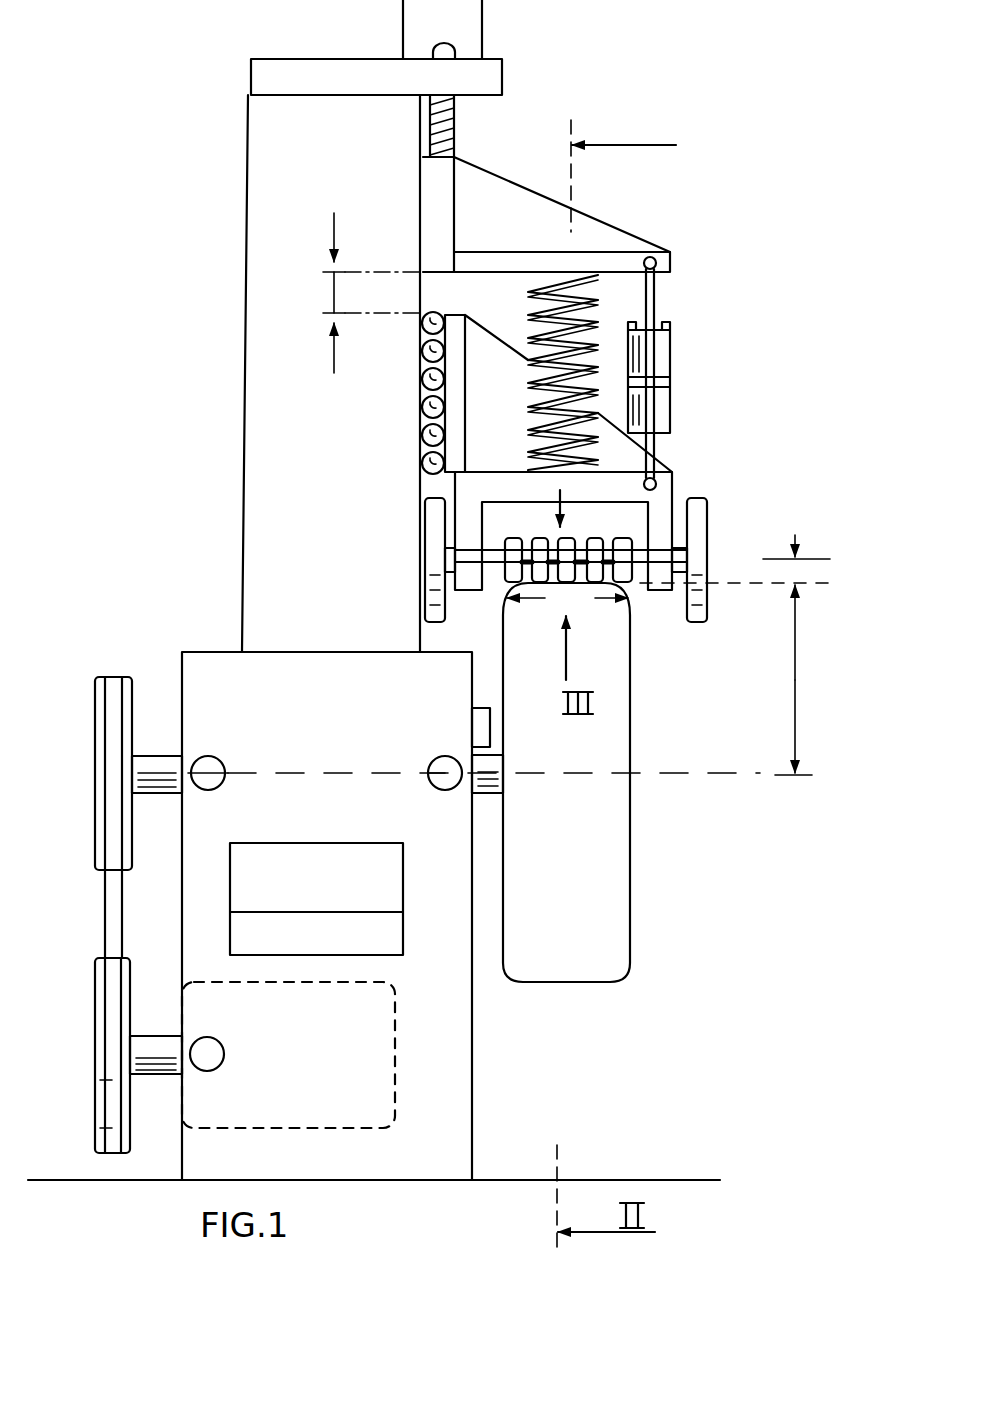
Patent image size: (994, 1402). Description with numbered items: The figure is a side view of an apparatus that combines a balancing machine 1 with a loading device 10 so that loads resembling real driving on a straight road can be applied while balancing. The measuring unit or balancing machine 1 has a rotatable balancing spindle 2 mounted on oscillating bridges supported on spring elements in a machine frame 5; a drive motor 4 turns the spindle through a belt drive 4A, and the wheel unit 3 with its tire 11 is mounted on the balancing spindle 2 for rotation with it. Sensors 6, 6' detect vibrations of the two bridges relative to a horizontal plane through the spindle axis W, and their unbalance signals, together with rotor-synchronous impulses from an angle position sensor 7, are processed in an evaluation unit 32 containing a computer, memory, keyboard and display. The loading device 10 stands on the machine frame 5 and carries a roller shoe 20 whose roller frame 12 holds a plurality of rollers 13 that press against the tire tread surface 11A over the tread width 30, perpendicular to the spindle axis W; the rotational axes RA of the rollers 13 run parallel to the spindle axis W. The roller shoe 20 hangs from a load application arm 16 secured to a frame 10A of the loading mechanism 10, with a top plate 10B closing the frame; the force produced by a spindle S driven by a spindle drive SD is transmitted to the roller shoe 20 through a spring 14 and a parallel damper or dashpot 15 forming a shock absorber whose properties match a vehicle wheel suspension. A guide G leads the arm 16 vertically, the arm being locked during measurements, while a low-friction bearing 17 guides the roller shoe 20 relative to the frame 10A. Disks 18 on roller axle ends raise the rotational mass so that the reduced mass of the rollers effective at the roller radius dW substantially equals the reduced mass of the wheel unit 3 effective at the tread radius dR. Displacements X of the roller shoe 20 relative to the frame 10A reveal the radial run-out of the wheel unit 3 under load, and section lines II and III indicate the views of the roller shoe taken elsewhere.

The balancing machine 1 is at (218, 678).
The balancing spindle 2 is at (497, 767).
The wheel unit 3 is at (644, 955).
The drive motor 4 is at (297, 1112).
The belt drive 4A is at (102, 918).
The machine frame 5 is at (404, 1170).
The sensor 6 is at (194, 766).
The sensor 6' is at (426, 764).
The angle position sensor 7 is at (489, 732).
The loading device 10 is at (286, 373).
The frame of the loading mechanism 10A is at (265, 488).
The top plate 10B is at (484, 79).
The tire 11 is at (588, 782).
The tire tread surface 11A is at (598, 586).
The roller frame 12 is at (663, 512).
The rollers 13 is at (627, 547).
The spring 14 is at (600, 303).
The damper or dashpot 15 is at (654, 401).
The load application arm 16 is at (600, 243).
The low-friction bearing 17 is at (424, 402).
The disks 18 is at (440, 530).
The roller shoe 20 is at (668, 617).
The tread width 30 is at (567, 600).
The evaluation unit 32 is at (373, 866).
The spindle drive SD is at (470, 28).
The spindle S is at (454, 137).
The guide G is at (423, 215).
The displacements X is at (363, 293).
The rotational axes RA is at (826, 563).
The spindle axis W is at (606, 772).
The roller radius dW is at (790, 567).
The tread radius dR is at (802, 672).
The section line II is at (654, 142).
The section arrows III is at (605, 530).